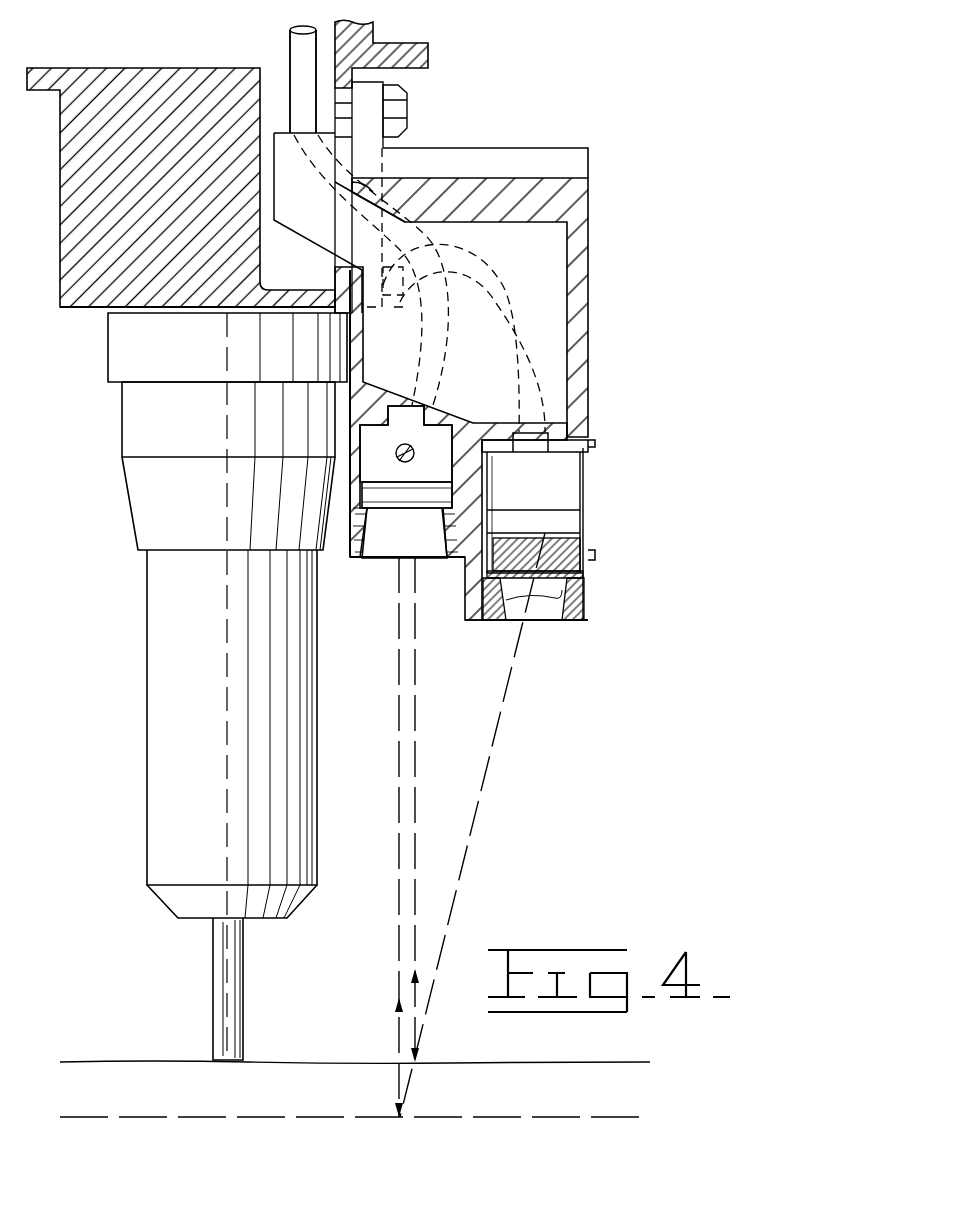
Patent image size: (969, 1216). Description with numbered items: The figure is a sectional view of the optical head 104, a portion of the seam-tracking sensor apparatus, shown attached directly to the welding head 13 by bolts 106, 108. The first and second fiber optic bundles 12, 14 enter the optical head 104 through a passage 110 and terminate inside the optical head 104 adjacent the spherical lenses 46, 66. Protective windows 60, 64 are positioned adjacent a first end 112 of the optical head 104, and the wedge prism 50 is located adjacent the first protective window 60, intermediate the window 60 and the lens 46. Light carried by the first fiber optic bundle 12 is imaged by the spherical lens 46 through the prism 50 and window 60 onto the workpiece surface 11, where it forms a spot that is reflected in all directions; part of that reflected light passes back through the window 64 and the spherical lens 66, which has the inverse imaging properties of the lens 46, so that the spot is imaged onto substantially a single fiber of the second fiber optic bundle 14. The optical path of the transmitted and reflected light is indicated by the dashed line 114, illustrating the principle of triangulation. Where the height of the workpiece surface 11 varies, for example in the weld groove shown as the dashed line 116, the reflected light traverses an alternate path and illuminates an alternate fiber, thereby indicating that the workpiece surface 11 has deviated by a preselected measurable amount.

The workpiece surface 11 is at (177, 1062).
The first fiber optic bundle 12 is at (291, 62).
The second fiber optic bundle 14 is at (303, 81).
The welding head 13 is at (128, 520).
The spherical lens 46 is at (572, 455).
The wedge prism 50 is at (493, 570).
The protective window 60 is at (584, 602).
The protective window 64 is at (439, 431).
The spherical lens 66 is at (380, 513).
The optical head 104 is at (598, 345).
The bolt 106 is at (404, 116).
The bolt 108 is at (426, 243).
The passage 110 is at (356, 186).
The first end 112 is at (572, 628).
The optical path 114 is at (478, 833).
The weld groove 116 is at (313, 1117).